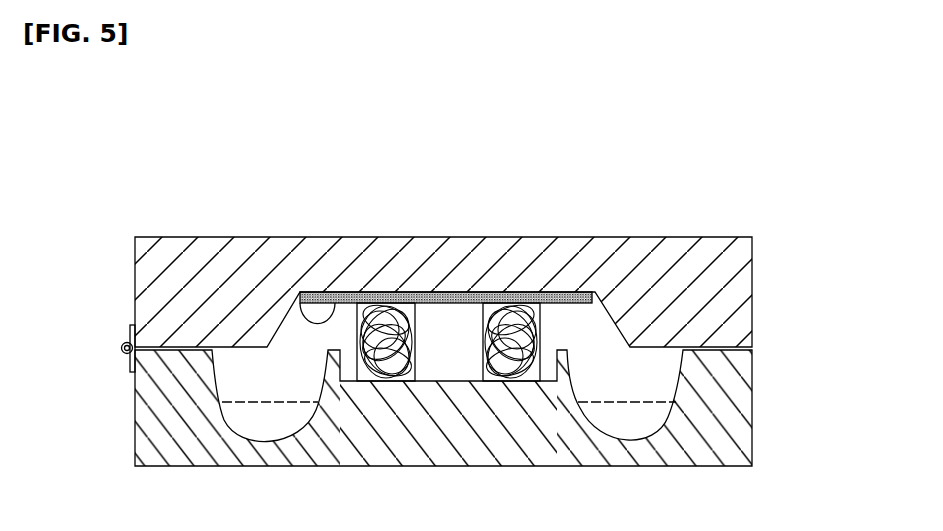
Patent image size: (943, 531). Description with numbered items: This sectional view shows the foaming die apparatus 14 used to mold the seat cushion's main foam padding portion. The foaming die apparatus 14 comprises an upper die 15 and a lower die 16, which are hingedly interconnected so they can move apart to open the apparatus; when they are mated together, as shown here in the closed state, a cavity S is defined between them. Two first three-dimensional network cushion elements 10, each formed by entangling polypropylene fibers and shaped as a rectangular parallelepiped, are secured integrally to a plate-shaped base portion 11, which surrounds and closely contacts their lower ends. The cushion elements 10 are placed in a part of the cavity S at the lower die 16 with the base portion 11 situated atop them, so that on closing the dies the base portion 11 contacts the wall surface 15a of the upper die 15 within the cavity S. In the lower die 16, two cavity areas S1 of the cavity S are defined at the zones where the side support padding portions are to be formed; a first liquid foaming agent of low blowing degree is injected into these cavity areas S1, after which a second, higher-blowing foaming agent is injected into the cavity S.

The foaming die apparatus 14 is at (162, 206).
The upper die 15 is at (708, 288).
The wall surface of the upper die 15a is at (293, 300).
The lower die 16 is at (732, 425).
The first three-dimensional network cushion element 10 is at (378, 300).
The base portion 11 is at (448, 292).
The cavity S is at (455, 354).
The cavity areas S1 is at (281, 431).